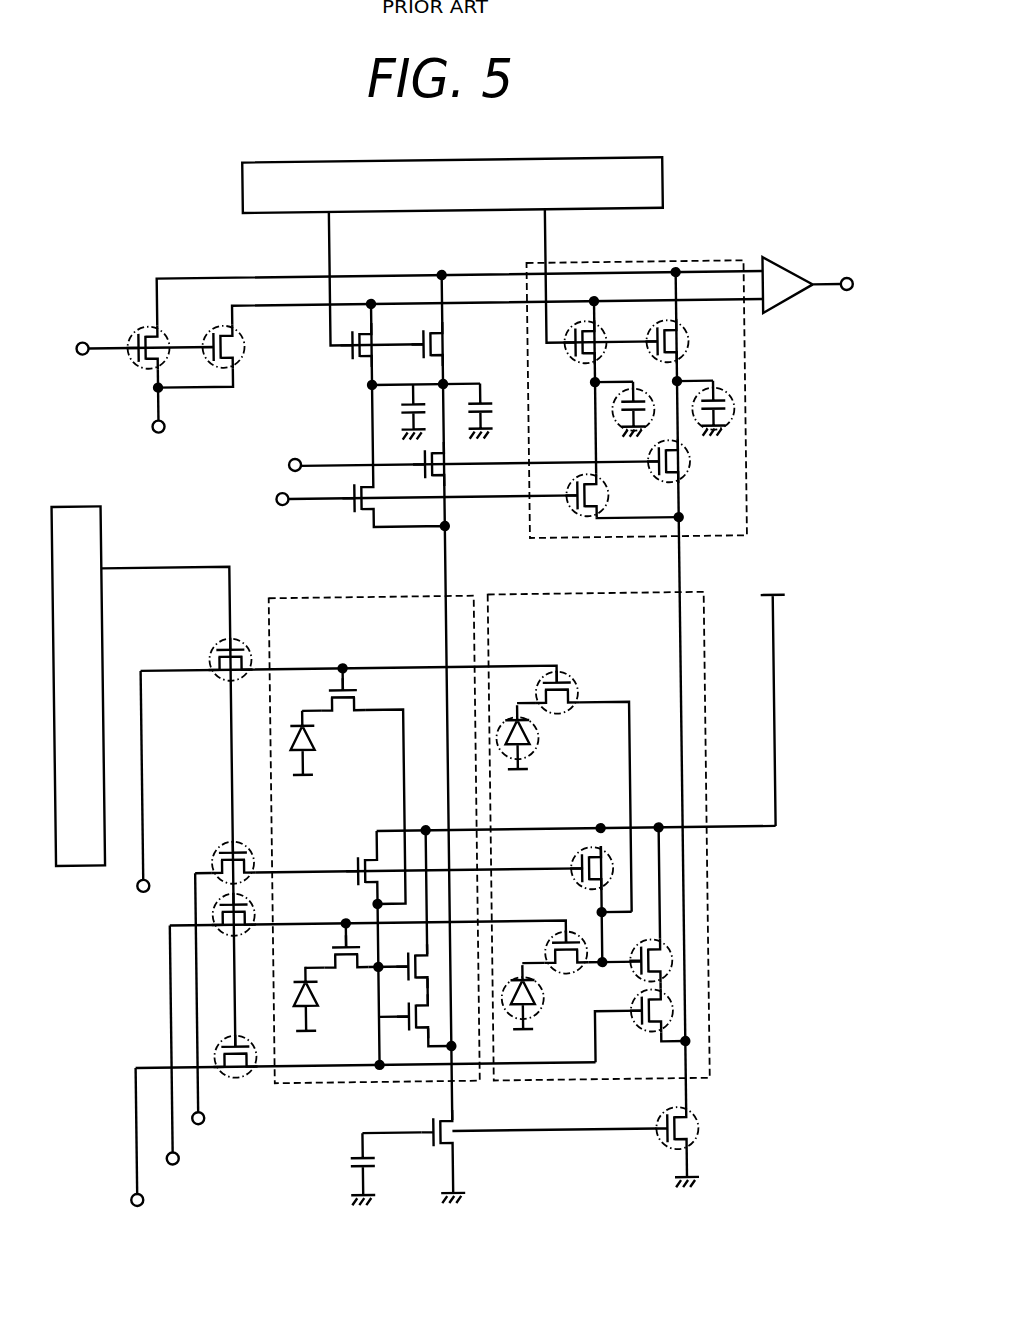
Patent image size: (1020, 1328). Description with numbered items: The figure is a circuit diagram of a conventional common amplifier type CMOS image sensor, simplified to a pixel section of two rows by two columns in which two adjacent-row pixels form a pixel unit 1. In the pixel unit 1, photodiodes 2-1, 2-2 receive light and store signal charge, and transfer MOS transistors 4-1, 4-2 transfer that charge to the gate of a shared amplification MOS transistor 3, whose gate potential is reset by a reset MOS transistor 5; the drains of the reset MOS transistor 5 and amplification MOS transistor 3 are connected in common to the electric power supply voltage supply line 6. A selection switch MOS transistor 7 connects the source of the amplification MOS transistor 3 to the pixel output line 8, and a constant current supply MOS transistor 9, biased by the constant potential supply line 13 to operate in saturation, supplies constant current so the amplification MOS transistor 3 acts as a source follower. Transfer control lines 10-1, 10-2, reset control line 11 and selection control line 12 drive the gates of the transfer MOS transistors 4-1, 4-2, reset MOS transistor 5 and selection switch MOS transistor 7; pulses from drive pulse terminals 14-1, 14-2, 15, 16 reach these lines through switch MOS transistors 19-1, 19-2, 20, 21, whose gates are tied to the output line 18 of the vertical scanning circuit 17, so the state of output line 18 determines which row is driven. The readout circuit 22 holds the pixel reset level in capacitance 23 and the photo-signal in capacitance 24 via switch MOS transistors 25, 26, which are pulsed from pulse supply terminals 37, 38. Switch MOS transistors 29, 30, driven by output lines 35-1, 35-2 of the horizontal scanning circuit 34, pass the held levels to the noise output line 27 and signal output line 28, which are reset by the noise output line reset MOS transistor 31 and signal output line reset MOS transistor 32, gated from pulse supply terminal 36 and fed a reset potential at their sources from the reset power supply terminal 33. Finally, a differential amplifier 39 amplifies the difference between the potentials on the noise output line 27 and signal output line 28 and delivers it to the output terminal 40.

The pixel unit 1 is at (355, 596).
The photodiode 2-1 is at (538, 733).
The photodiode 2-2 is at (540, 1000).
The amplification MOS transistor 3 is at (665, 958).
The transfer MOS transistor 4-1 is at (565, 676).
The transfer MOS transistor 4-2 is at (552, 940).
The reset MOS transistor 5 is at (572, 862).
The electric power supply voltage supply line 6 is at (775, 700).
The selection switch MOS transistor 7 is at (665, 1010).
The pixel output line 8 is at (684, 680).
The constant current supply MOS transistor 9 is at (690, 1128).
The transfer control line 10-1 is at (328, 665).
The transfer control line 10-2 is at (326, 922).
The reset control line 11 is at (300, 868).
The selection control line 12 is at (335, 1062).
The constant potential supply line 13 is at (553, 1131).
The drive pulse terminal 14-1 is at (141, 889).
The drive pulse terminal 14-2 is at (173, 1160).
The drive pulse terminal 15 is at (199, 1121).
The drive pulse terminal 16 is at (137, 1202).
The vertical scanning circuit 17 is at (78, 502).
The output line of the vertical scanning circuit 18 is at (170, 564).
The switch MOS transistor 19-1 is at (216, 640).
The switch MOS transistor 19-2 is at (219, 918).
The switch MOS transistor 20 is at (222, 848).
The switch MOS transistor 21 is at (242, 1070).
The readout circuit 22 is at (749, 502).
The capacitance 23 is at (618, 418).
The capacitance 24 is at (738, 410).
The switch MOS transistor 25 is at (574, 507).
The switch MOS transistor 26 is at (692, 470).
The noise output line 27 is at (292, 303).
The signal output line 28 is at (165, 275).
The switch MOS transistor 29 is at (580, 356).
The switch MOS transistor 30 is at (692, 340).
The noise output line reset MOS transistor 31 is at (240, 352).
The signal output line reset MOS transistor 32 is at (138, 355).
The reset power supply terminal 33 is at (162, 429).
The horizontal scanning circuit 34 is at (670, 172).
The output line 35-1 is at (335, 243).
The output line 35-2 is at (551, 247).
The pulse supply terminal 36 is at (87, 338).
The pulse supply terminal 37 is at (280, 501).
The pulse supply terminal 38 is at (292, 465).
The differential amplifier 39 is at (790, 261).
The output terminal 40 is at (851, 296).